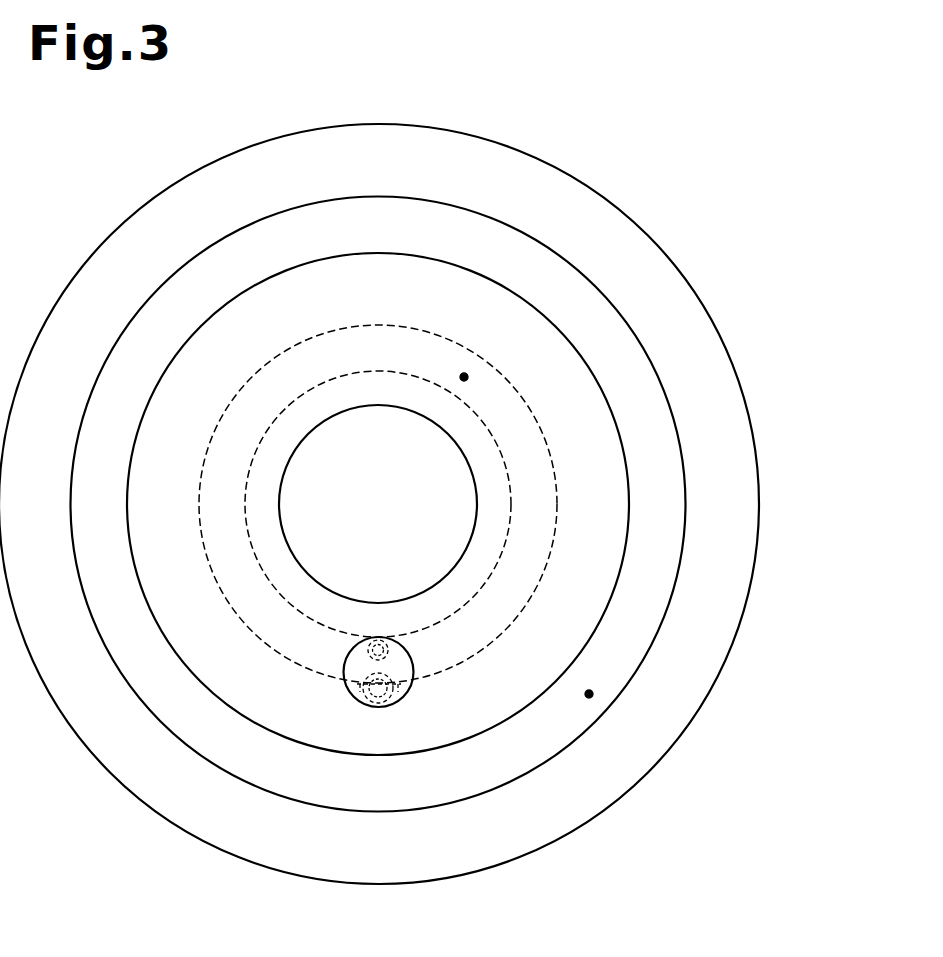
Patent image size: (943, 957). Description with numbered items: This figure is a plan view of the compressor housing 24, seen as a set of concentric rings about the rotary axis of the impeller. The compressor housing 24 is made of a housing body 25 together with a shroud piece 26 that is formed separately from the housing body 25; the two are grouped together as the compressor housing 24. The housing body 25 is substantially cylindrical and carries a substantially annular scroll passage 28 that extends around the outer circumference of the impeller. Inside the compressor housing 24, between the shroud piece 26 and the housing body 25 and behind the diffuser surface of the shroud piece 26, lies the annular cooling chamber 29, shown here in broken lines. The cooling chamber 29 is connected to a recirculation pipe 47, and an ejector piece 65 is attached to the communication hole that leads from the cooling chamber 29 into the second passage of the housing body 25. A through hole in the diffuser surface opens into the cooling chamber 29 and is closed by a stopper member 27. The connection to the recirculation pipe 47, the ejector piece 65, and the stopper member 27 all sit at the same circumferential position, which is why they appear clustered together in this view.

The compressor housing 24 is at (430, 504).
The housing body 25 is at (745, 546).
The shroud piece 26 is at (607, 488).
The stopper member 27 is at (407, 668).
The scroll passage 28 is at (589, 694).
The cooling chamber 29 is at (462, 380).
The recirculation pipe 47 is at (388, 648).
The ejector piece 65 is at (352, 696).